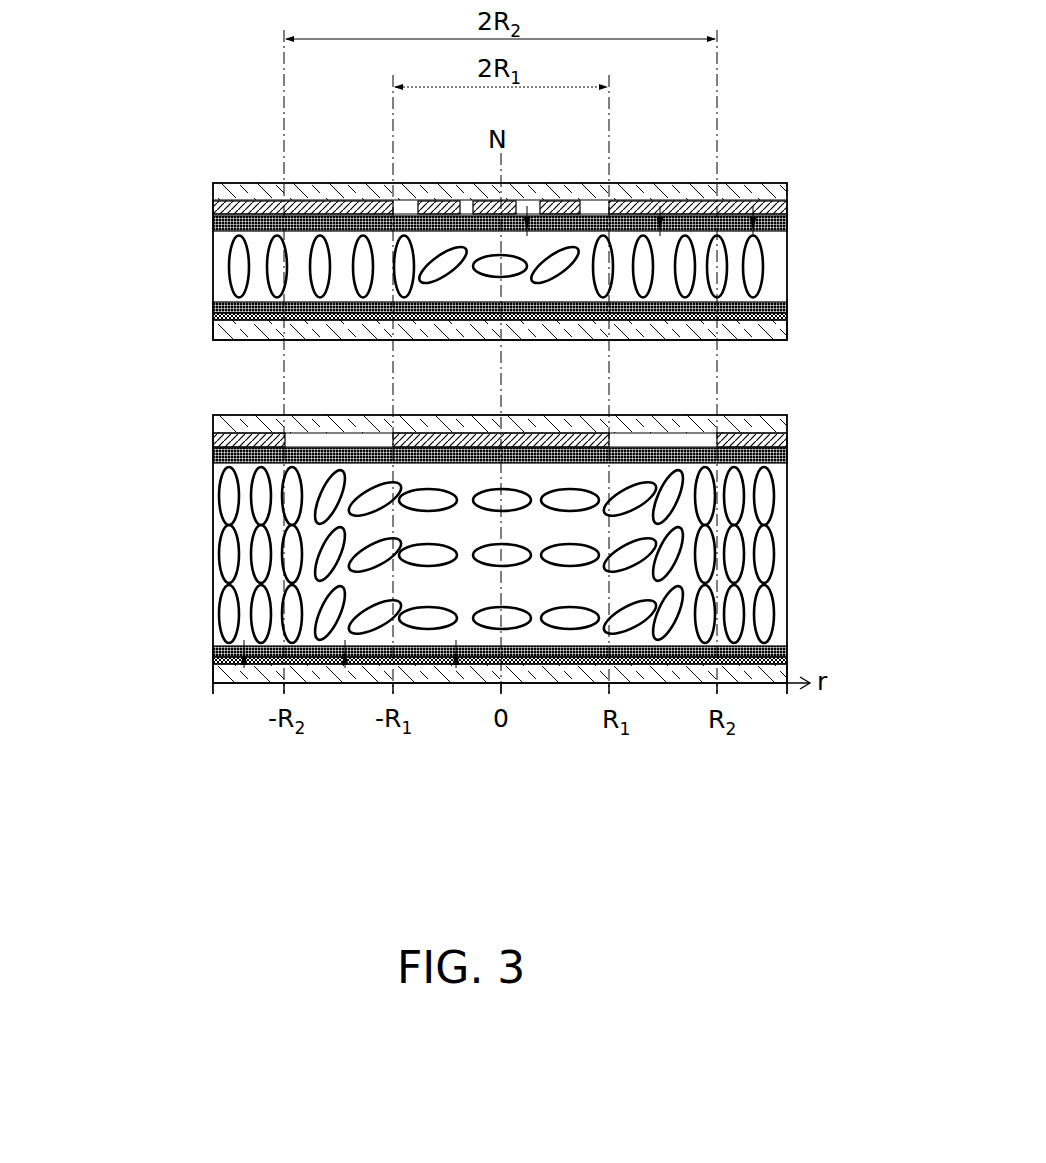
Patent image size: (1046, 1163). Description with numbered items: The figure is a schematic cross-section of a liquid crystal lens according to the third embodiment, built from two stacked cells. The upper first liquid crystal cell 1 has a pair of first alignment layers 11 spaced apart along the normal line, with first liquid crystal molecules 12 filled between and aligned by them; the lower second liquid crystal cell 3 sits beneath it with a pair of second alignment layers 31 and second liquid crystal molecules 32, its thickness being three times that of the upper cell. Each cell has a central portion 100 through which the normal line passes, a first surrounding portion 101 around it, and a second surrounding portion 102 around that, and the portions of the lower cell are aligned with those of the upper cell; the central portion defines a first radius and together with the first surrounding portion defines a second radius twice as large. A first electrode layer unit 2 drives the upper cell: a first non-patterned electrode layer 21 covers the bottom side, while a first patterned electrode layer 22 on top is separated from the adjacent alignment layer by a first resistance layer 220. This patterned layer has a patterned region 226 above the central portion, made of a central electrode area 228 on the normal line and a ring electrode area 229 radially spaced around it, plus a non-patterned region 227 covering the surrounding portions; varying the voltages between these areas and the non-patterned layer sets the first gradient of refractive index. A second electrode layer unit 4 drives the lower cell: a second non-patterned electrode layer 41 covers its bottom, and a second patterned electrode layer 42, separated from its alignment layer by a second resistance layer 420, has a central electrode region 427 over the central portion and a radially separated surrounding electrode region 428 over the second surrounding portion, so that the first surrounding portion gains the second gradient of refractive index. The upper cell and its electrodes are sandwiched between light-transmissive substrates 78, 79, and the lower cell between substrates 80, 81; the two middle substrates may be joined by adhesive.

The first liquid crystal cell 1 is at (118, 275).
The first electrode layer unit 2 is at (481, 156).
The first patterned electrode layer 22 is at (200, 202).
The first resistance layer 220 is at (215, 215).
The non-patterned region 227 is at (313, 200).
The patterned region 226 is at (423, 201).
The central electrode area 228 is at (485, 201).
The ring electrode area 229 is at (560, 201).
The first alignment layers 11 is at (215, 222).
The first liquid crystal molecules 12 is at (213, 266).
The first non-patterned electrode layer 21 is at (215, 316).
The substrate 78 is at (785, 193).
The substrate 79 is at (775, 330).
The central portion 100 is at (527, 210).
The first surrounding portion 101 is at (660, 210).
The second surrounding portion 102 is at (755, 210).
The second liquid crystal cell 3 is at (112, 511).
The second electrode layer unit 4 is at (486, 409).
The second patterned electrode layer 42 is at (203, 437).
The second resistance layer 420 is at (215, 448).
The surrounding electrode region 428 is at (256, 435).
The central electrode region 427 is at (440, 435).
The second alignment layers 31 is at (215, 455).
The second liquid crystal molecules 32 is at (213, 553).
The second non-patterned electrode layer 41 is at (215, 660).
The substrate 80 is at (772, 425).
The substrate 81 is at (215, 673).